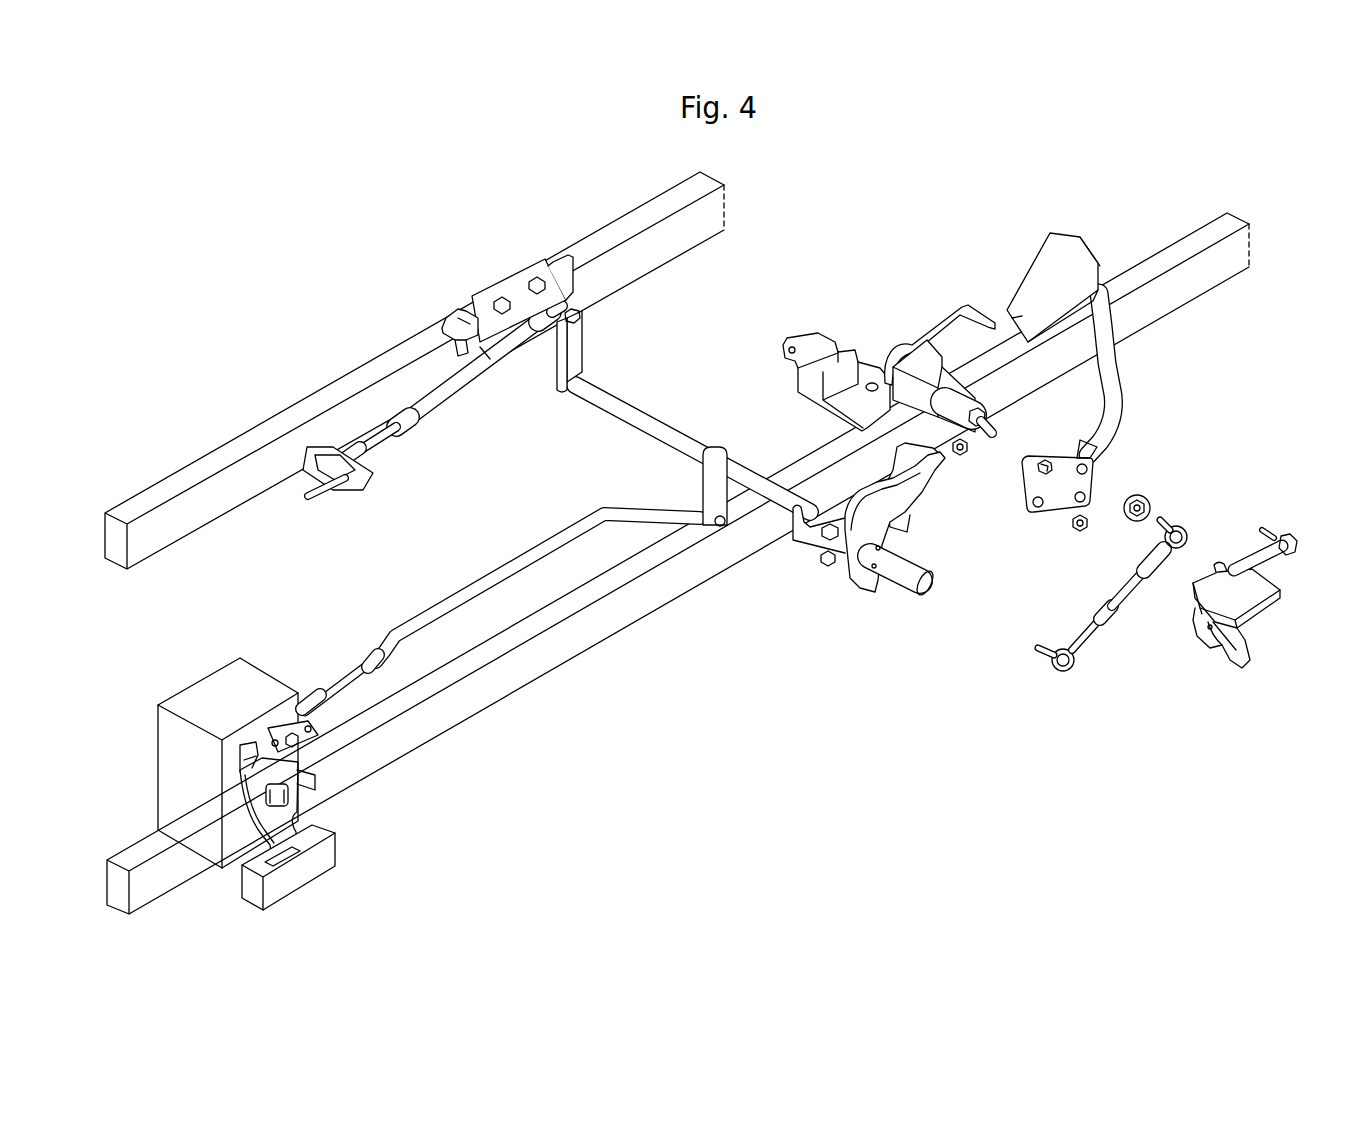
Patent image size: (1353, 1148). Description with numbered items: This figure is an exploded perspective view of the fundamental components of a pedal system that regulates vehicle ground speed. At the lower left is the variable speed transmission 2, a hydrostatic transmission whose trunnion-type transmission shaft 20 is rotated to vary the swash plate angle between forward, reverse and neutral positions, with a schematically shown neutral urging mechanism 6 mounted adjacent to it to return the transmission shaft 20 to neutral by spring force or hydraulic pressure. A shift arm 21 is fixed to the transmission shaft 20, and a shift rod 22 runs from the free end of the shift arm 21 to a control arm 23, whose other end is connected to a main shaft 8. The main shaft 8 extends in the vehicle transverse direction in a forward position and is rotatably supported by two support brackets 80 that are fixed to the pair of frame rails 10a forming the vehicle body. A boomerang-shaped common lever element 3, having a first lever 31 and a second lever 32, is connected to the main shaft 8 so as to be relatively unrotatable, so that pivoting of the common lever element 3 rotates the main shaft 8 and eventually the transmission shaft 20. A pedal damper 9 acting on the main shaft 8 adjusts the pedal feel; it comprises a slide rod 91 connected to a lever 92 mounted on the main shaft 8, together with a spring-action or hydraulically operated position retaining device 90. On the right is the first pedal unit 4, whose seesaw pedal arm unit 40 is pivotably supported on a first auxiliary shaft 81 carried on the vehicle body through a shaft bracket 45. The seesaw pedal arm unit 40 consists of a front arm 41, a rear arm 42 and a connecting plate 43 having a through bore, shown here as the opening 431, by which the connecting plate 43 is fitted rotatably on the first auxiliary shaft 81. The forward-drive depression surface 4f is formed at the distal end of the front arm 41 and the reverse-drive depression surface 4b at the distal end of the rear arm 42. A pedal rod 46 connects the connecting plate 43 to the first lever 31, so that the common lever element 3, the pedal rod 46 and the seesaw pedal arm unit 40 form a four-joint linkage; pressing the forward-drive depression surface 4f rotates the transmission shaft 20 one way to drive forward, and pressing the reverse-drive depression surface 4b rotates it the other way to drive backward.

The frame rails 10a is at (228, 445).
The variable speed transmission 2 is at (213, 695).
The transmission shaft 20 is at (288, 800).
The shift arm 21 is at (288, 842).
The shift rod 22 is at (470, 590).
The control arm 23 is at (702, 492).
The common lever element 3 is at (879, 554).
The first lever 31 is at (880, 578).
The second lever 32 is at (915, 502).
The first pedal unit 4 is at (1145, 420).
The forward-drive depression surface 4f is at (1052, 268).
The reverse-drive depression surface 4b is at (1227, 590).
The seesaw pedal arm unit 40 is at (1110, 389).
The front arm 41 is at (1113, 378).
The rear arm 42 is at (1213, 653).
The connecting plate 43 is at (1059, 492).
The mounting hole 431 is at (1043, 462).
The shaft bracket 45 is at (850, 357).
The pedal rod 46 is at (1120, 603).
The neutral urging mechanism 6 is at (305, 881).
The main shaft 8 is at (665, 437).
The support brackets 80 is at (517, 300).
The first auxiliary shaft 81 is at (912, 363).
The pedal damper 9 is at (432, 407).
The position retaining device 90 is at (477, 370).
The slide rod 91 is at (383, 447).
The lever 92 is at (578, 343).